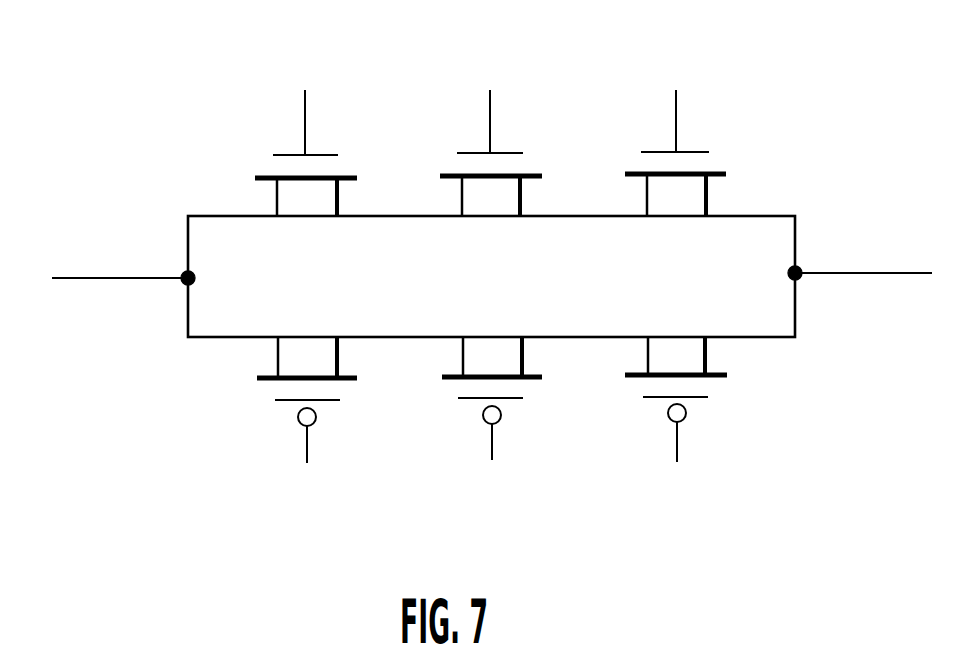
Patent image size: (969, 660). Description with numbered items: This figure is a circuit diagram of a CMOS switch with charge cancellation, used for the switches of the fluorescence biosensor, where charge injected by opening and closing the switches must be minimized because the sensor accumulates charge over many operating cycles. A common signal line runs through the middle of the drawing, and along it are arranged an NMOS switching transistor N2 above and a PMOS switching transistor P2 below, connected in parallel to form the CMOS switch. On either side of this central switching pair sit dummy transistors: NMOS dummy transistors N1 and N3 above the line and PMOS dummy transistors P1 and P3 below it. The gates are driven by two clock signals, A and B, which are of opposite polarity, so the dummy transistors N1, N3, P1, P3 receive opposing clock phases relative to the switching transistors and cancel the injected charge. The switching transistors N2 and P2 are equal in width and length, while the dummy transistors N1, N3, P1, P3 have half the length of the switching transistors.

The dummy NMOS transistor N1 is at (273, 150).
The NMOS switching transistor N2 is at (460, 148).
The dummy NMOS transistor N3 is at (636, 147).
The dummy PMOS transistor P1 is at (268, 385).
The PMOS switching transistor P2 is at (457, 383).
The dummy PMOS transistor P3 is at (630, 382).